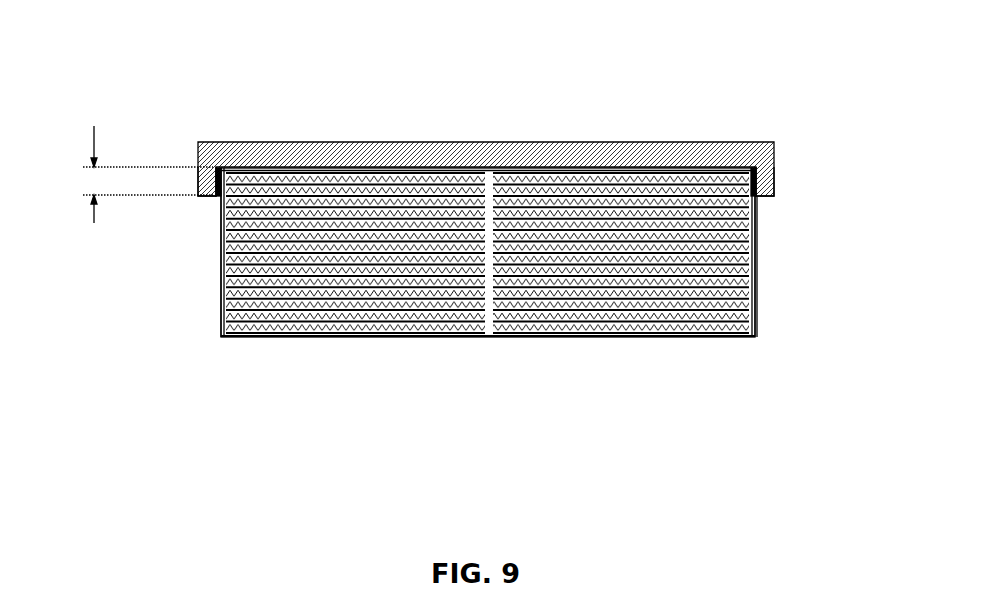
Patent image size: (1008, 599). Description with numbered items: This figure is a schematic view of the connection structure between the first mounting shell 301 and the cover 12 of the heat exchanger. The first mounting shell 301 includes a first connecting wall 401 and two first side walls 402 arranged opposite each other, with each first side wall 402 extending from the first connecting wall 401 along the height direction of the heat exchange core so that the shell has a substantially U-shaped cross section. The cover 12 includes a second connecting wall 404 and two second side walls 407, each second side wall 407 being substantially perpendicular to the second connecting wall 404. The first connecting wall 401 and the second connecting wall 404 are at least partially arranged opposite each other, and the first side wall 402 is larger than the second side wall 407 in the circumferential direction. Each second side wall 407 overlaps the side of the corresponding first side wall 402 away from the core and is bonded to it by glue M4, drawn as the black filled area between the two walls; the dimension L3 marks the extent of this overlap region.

The cover 12 is at (486, 227).
The second connecting wall 404 is at (427, 136).
The second side wall 407 is at (198, 136).
The glue M4 is at (211, 190).
The first side wall 402 is at (213, 300).
The first connecting wall 401 is at (377, 327).
The first mounting shell 301 is at (316, 342).
The flange height dimension L3 is at (123, 174).